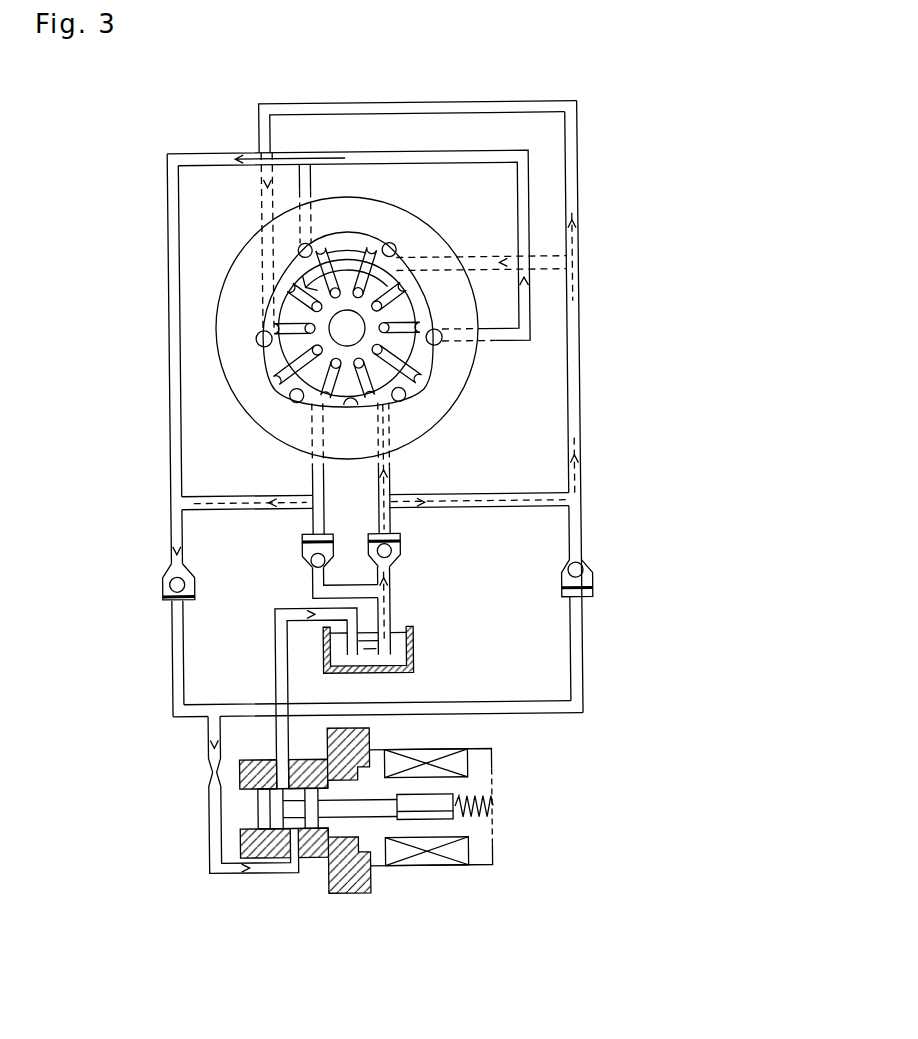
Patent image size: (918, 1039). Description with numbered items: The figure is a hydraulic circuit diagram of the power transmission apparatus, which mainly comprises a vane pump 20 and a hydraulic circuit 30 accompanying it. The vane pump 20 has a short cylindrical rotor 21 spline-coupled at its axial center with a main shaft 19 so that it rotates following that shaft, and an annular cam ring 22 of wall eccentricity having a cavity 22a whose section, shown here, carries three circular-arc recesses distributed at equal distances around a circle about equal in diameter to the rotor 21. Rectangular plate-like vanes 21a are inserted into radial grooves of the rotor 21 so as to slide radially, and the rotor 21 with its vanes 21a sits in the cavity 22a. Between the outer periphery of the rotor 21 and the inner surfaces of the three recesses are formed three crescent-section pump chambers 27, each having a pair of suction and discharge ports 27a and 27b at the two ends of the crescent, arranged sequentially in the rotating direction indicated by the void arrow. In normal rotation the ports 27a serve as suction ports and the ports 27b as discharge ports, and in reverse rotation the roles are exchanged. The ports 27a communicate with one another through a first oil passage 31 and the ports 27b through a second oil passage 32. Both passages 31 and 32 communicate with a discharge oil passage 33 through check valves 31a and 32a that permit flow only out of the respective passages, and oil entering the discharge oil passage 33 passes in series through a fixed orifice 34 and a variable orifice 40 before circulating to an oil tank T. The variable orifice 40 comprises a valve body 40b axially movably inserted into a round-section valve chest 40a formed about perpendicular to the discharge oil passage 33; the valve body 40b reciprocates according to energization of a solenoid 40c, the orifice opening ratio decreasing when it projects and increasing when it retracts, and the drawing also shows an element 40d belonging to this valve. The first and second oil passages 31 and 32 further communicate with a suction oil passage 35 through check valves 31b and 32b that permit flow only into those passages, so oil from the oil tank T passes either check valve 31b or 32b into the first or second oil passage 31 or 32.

The main shaft 19 is at (330, 325).
The vane pump 20 is at (194, 318).
The rotor 21 is at (414, 298).
The vanes 21a is at (273, 378).
The cam ring 22 is at (475, 311).
The cavity 22a is at (373, 404).
The pump chambers 27 is at (349, 230).
The suction and discharge port 27a is at (421, 394).
The suction and discharge port 27b is at (318, 410).
The hydraulic circuit 30 is at (632, 418).
The first oil passage 31 is at (581, 526).
The check valve 31a is at (591, 586).
The check valve 31b is at (398, 546).
The second oil passage 32 is at (173, 531).
The check valve 32a is at (160, 595).
The check valve 32b is at (301, 551).
The discharge oil passage 33 is at (171, 691).
The fixed orifice 34 is at (200, 790).
The suction oil passage 35 is at (388, 605).
The variable orifice 40 is at (411, 899).
The valve chest 40a is at (257, 813).
The valve body 40b is at (303, 826).
The solenoid 40c is at (463, 847).
The solenoid coil 40d is at (490, 780).
The oil tank T is at (411, 661).